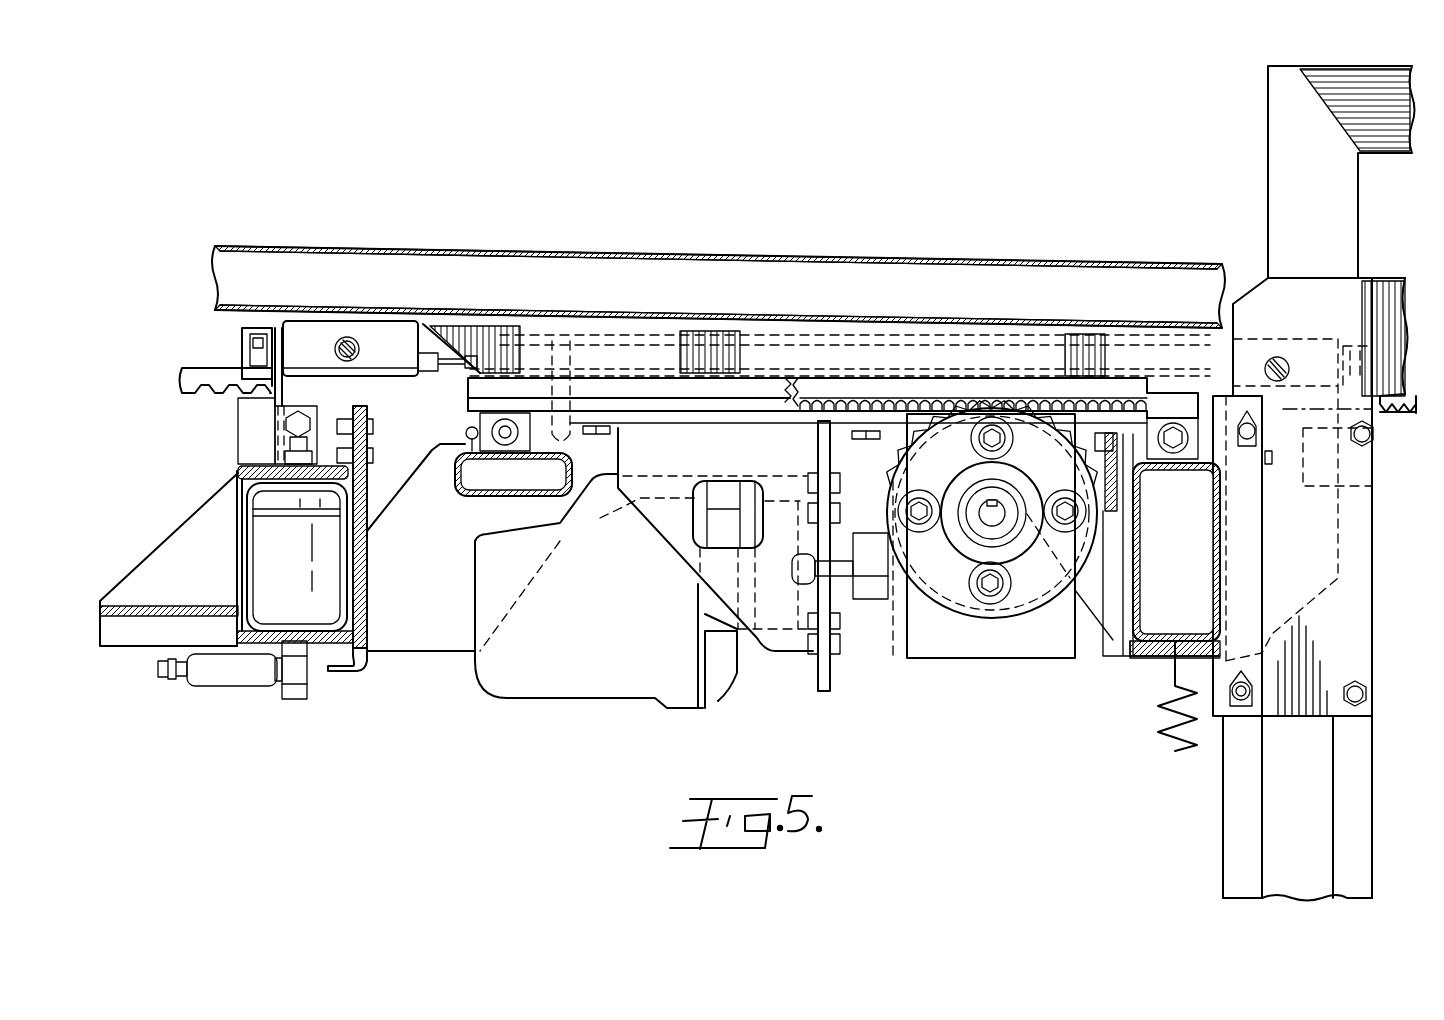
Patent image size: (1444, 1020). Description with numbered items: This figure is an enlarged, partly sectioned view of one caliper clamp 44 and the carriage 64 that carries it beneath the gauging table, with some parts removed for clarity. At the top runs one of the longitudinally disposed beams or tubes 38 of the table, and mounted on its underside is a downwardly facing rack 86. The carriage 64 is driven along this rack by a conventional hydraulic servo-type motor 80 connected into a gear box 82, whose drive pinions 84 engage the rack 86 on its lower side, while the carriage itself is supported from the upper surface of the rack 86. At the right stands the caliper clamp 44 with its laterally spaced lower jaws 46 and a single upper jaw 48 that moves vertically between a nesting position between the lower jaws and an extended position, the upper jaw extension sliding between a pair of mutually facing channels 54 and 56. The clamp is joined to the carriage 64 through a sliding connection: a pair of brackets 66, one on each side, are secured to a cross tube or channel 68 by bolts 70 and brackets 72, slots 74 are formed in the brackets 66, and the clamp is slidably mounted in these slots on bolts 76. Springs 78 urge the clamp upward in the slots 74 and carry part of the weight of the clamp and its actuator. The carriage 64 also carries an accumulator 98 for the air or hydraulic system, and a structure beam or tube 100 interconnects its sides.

The longitudinally disposed beams or tubes 38 is at (788, 263).
The caliper clamp 44 is at (1250, 235).
The lower jaws 46 is at (1395, 282).
The upper jaw 48 is at (1378, 150).
The channel 54 is at (1232, 843).
The channel 56 is at (1368, 802).
The carriage 64 is at (435, 640).
The brackets 66 is at (1257, 582).
The cross tube or channel 68 is at (1140, 602).
The bolts 70 is at (1160, 655).
The brackets 72 is at (1128, 578).
The slots 74 is at (1250, 680).
The bolts 76 is at (1243, 700).
The springs 78 is at (1168, 744).
The hydraulic servo-type motor 80 is at (574, 698).
The gear box 82 is at (1020, 657).
The drive pinions 84 is at (903, 428).
The rack 86 is at (805, 385).
The accumulator 98 is at (262, 559).
The structure beam or tube 100 is at (475, 497).